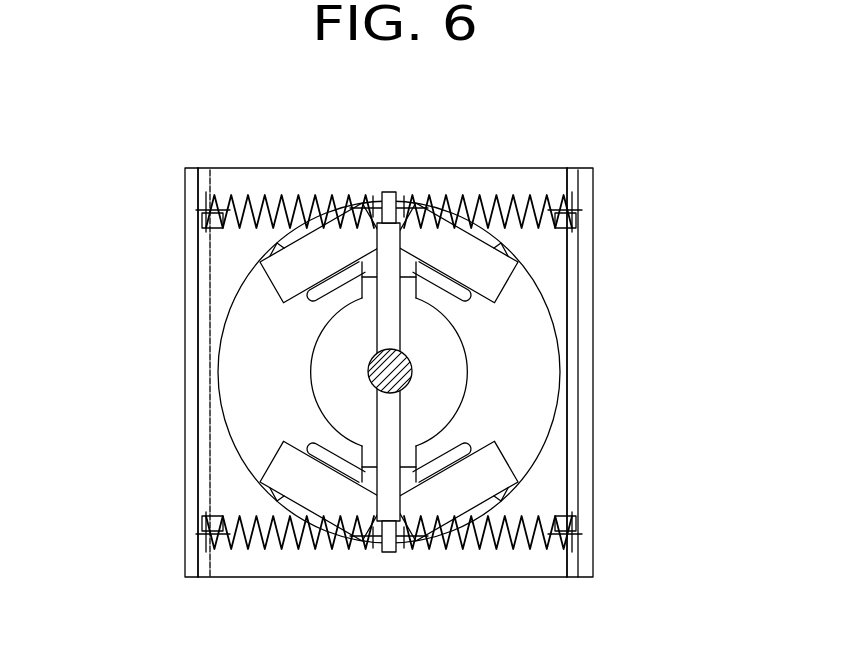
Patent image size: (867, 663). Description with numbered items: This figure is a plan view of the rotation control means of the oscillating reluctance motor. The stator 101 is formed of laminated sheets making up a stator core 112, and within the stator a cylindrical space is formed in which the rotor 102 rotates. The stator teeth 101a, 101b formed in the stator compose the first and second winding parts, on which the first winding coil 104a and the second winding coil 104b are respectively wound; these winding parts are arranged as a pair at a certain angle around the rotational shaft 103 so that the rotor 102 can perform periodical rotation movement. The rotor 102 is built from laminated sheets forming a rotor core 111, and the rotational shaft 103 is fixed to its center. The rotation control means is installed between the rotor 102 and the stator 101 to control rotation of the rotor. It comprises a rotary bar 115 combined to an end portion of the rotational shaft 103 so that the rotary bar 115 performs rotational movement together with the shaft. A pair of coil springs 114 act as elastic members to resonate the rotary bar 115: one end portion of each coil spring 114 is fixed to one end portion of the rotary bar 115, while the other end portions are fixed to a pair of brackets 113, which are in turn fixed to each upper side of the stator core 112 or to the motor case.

The stator 101 is at (606, 140).
The stator tooth 101a is at (300, 290).
The stator tooth 101b is at (465, 302).
The rotor 102 is at (485, 376).
The rotational shaft 103 is at (380, 376).
The first winding coil 104a is at (288, 276).
The second winding coil 104b is at (490, 270).
The rotor core 111 is at (332, 350).
The stator core 112 is at (260, 182).
The bracket 113 is at (192, 258).
The coil spring 114 is at (493, 217).
The rotary bar 115 is at (390, 505).